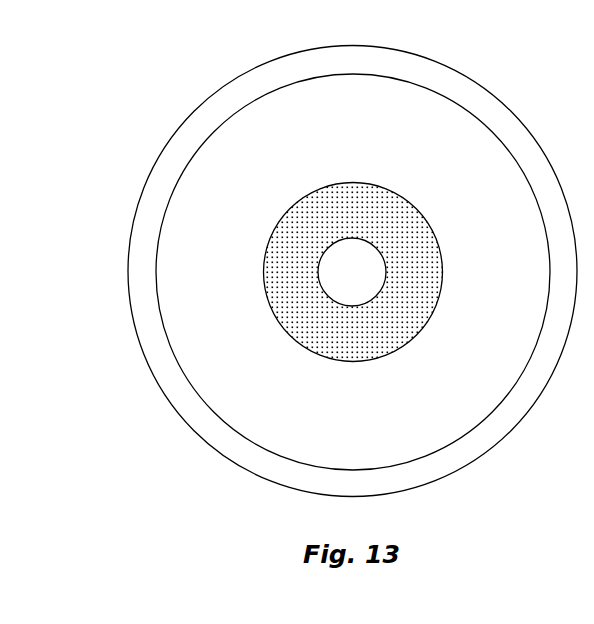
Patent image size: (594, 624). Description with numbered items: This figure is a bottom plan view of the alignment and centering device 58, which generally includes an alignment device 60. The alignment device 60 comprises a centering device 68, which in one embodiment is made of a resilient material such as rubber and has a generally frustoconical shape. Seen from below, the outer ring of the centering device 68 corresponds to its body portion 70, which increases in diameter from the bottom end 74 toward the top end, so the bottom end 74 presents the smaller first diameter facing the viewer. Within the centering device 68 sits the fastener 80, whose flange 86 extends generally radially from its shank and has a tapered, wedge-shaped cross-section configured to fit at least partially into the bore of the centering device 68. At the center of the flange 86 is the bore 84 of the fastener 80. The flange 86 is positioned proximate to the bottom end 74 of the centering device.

The alignment and centering device 58 is at (124, 80).
The alignment device 60 is at (198, 87).
The centering device 68 is at (139, 152).
The body portion 70 is at (215, 435).
The bottom end 74 is at (364, 412).
The fastener 80 is at (296, 294).
The bore 84 is at (353, 255).
The flange 86 is at (299, 233).